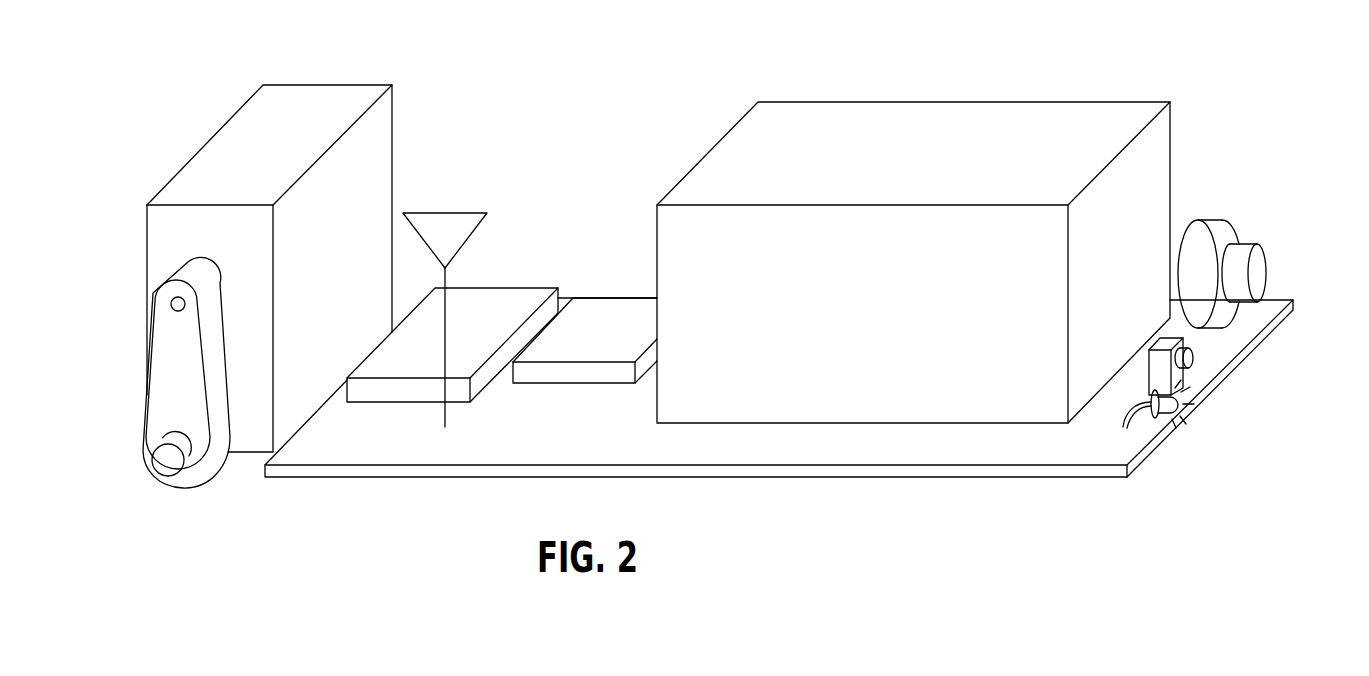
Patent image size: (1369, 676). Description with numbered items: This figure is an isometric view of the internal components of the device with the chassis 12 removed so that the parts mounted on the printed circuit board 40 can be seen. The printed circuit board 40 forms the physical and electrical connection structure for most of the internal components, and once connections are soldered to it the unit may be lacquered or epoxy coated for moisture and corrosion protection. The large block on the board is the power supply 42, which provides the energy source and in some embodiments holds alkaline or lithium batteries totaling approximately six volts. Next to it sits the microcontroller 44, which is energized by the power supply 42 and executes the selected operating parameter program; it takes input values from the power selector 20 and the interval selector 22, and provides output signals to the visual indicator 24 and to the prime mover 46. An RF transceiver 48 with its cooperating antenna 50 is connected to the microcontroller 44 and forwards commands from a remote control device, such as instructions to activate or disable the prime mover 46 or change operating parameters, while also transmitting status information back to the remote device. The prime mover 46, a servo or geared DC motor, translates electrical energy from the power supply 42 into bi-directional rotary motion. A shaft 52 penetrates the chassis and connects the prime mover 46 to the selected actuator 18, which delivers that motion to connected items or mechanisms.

The chassis 12 is at (549, 58).
The actuator 18 is at (168, 348).
The power selector 20 is at (1195, 357).
The interval selector 22 is at (1256, 270).
The visual indicator 24 is at (1172, 409).
The printed circuit board 40 is at (1135, 468).
The power supply 42 is at (1048, 102).
The microcontroller 44 is at (614, 315).
The prime mover 46 is at (393, 103).
The RF transceiver 48 is at (532, 296).
The antenna 50 is at (447, 228).
The shaft 52 is at (170, 458).